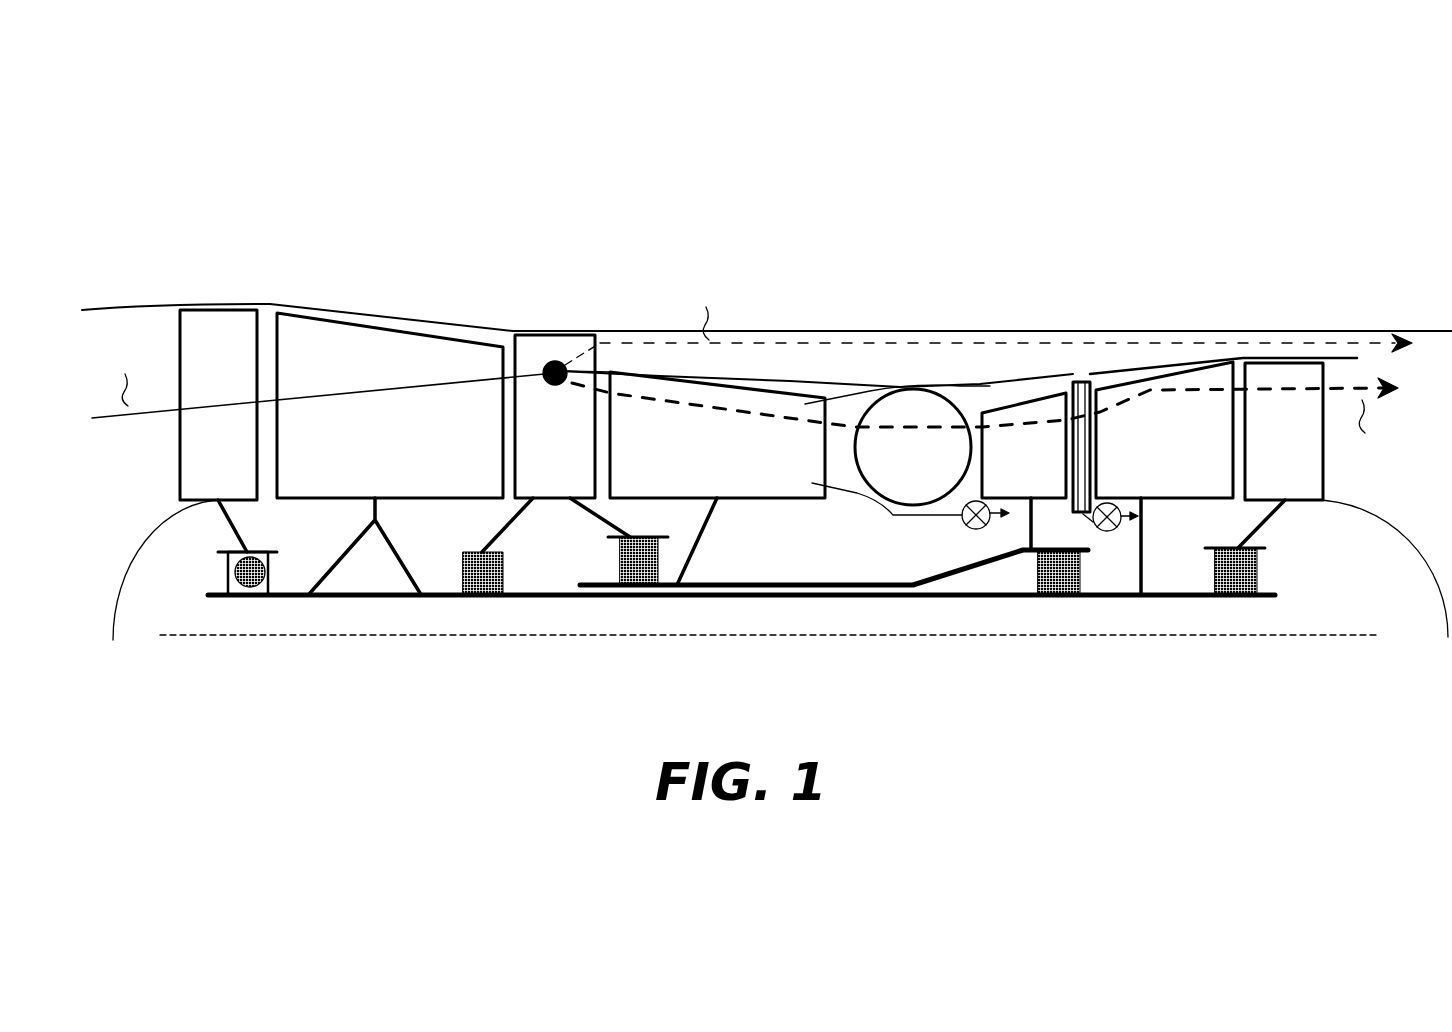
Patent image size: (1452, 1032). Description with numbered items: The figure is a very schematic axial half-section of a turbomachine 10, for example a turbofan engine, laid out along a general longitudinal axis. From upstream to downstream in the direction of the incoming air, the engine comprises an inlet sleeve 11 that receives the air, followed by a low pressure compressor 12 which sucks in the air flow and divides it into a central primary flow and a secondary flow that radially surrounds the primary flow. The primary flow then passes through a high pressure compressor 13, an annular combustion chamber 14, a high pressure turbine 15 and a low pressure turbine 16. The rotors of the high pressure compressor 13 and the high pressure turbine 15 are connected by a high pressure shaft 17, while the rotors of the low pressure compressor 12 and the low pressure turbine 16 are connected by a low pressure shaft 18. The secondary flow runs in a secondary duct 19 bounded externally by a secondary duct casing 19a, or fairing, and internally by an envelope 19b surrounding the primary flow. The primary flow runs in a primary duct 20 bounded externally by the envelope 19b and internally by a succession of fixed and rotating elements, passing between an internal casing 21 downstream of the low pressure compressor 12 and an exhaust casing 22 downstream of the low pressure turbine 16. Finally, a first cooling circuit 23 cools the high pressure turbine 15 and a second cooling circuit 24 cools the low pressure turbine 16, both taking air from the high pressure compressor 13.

The turbomachine 10 is at (1131, 226).
The inlet sleeve 11 is at (132, 318).
The low pressure compressor 12 is at (392, 490).
The high pressure compressor 13 is at (726, 489).
The annular combustion chamber 14 is at (925, 489).
The high pressure turbine 15 is at (1038, 489).
The low pressure turbine 16 is at (1177, 489).
The high pressure shaft 17 is at (812, 597).
The low pressure shaft 18 is at (885, 597).
The secondary duct 19 is at (1114, 375).
The secondary duct casing 19a is at (639, 329).
The envelope 19b is at (1300, 357).
The primary duct 20 is at (810, 545).
The internal casing 21 is at (562, 490).
The exhaust casing 22 is at (1296, 489).
The first cooling circuit 23 is at (943, 516).
The second cooling circuit 24 is at (1093, 524).